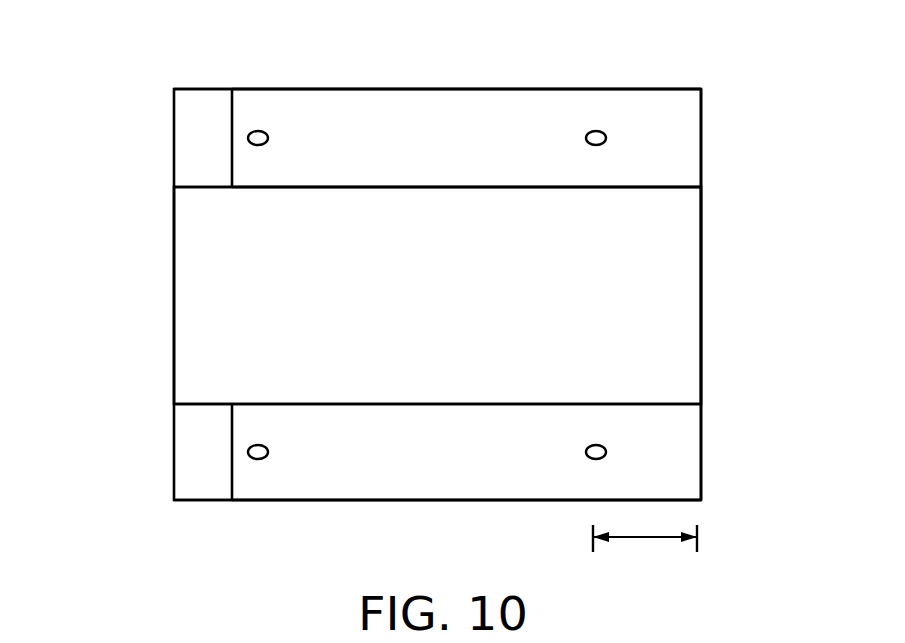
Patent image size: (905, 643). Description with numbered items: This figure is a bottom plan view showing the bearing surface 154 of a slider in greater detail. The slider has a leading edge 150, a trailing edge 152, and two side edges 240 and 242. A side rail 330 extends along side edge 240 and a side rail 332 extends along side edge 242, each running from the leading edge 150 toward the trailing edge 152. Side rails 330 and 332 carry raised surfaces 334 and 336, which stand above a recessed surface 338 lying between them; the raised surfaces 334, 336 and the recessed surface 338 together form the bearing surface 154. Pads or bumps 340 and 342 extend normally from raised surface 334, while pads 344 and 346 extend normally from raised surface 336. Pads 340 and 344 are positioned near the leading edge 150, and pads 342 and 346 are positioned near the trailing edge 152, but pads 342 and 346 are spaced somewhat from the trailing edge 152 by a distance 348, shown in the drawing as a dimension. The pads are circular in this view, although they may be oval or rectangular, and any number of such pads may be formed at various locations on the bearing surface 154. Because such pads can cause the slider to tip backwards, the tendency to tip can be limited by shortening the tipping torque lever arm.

The leading edge 150 is at (173, 308).
The trailing edge 152 is at (701, 277).
The bearing surface 154 is at (482, 133).
The side edge 240 is at (390, 502).
The side edge 242 is at (408, 88).
The side rail 330 is at (170, 448).
The side rail 332 is at (170, 140).
The raised surface 334 is at (318, 461).
The raised surface 336 is at (327, 117).
The recessed surface 338 is at (462, 293).
The pad 340 is at (258, 445).
The pad 342 is at (596, 445).
The pad 344 is at (259, 145).
The pad 346 is at (596, 145).
The distance 348 is at (633, 540).